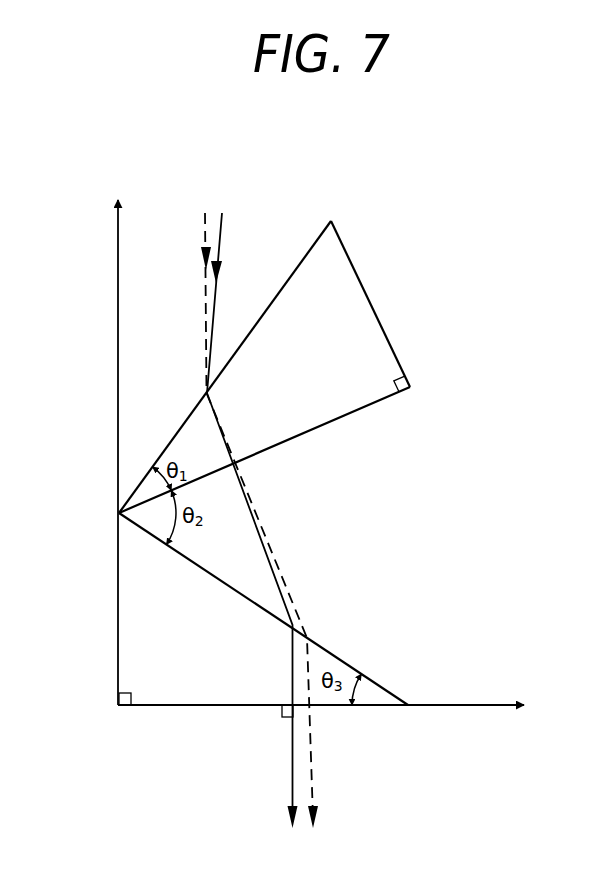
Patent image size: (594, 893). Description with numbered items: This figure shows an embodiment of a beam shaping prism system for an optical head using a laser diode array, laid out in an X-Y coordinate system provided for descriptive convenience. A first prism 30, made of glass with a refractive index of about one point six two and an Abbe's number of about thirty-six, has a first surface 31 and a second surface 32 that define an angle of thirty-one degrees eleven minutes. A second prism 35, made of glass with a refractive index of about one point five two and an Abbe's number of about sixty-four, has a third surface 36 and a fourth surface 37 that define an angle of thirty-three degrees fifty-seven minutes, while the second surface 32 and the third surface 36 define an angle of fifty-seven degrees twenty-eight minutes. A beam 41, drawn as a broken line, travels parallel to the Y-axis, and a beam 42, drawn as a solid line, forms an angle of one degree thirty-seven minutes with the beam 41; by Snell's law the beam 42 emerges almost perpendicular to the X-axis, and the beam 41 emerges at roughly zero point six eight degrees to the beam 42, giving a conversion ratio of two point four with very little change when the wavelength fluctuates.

The first prism 30 is at (270, 363).
The first surface 31 is at (303, 257).
The second surface 32 is at (372, 407).
The second prism 35 is at (142, 631).
The third surface 36 is at (338, 652).
The fourth surface 37 is at (170, 706).
The beam 41 is at (205, 232).
The beam 42 is at (222, 232).